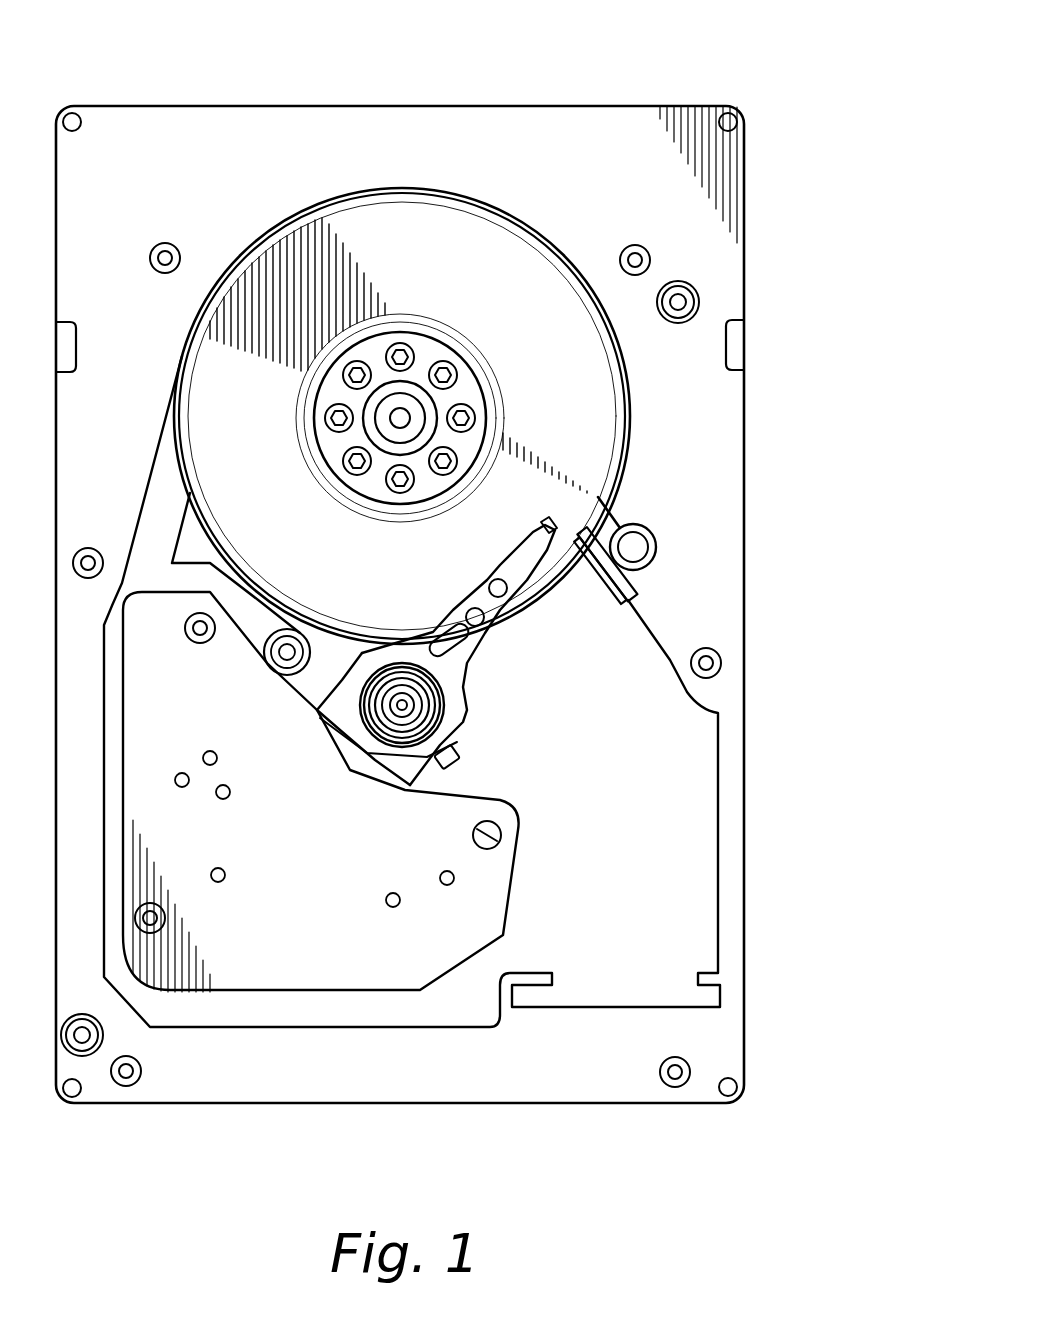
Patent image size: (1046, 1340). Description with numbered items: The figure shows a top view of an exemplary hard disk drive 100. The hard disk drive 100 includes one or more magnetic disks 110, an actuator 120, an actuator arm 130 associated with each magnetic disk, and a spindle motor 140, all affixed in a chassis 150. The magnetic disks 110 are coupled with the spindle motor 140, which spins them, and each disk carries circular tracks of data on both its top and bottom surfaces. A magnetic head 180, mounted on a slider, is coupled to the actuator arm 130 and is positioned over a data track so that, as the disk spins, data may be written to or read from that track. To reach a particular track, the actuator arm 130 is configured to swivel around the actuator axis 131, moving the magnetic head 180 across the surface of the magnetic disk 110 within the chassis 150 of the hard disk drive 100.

The hard disk drive 100 is at (645, 30).
The chassis 150 is at (172, 106).
The magnetic disk 110 is at (490, 247).
The spindle motor 140 is at (415, 417).
The actuator arm 130 is at (482, 598).
The actuator axis 131 is at (408, 708).
The magnetic head 180 is at (545, 527).
The actuator 120 is at (500, 893).